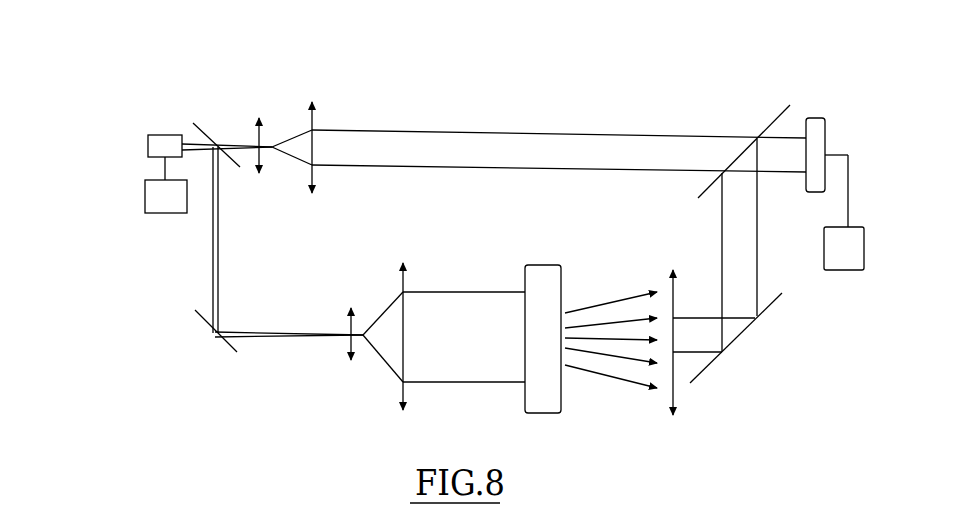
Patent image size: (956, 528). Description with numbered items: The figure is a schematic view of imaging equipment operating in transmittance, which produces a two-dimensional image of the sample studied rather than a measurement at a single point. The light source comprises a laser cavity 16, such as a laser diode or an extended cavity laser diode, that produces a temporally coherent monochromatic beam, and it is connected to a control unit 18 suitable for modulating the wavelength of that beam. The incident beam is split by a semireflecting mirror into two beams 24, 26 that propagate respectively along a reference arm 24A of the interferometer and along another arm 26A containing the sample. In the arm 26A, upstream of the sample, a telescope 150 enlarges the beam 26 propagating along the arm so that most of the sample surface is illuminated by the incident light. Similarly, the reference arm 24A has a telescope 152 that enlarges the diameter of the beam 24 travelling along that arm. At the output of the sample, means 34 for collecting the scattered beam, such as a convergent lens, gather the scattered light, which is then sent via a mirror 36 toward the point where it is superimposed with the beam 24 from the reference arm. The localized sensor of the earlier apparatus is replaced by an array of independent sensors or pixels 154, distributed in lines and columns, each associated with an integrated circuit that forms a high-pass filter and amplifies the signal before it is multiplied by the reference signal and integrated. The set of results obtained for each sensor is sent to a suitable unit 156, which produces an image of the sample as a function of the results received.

The laser cavity 16 is at (162, 141).
The control unit 18 is at (180, 207).
The telescope 152 is at (331, 107).
The beam 24 is at (488, 148).
The reference arm 24A is at (574, 124).
The array of independent sensors or pixels 154 is at (824, 108).
The unit 156 is at (843, 257).
The beam 26 is at (258, 332).
The telescope 150 is at (377, 297).
The arm 26A is at (461, 281).
The means for collecting the scattered beam 34 is at (659, 281).
The mirror 36 is at (739, 344).